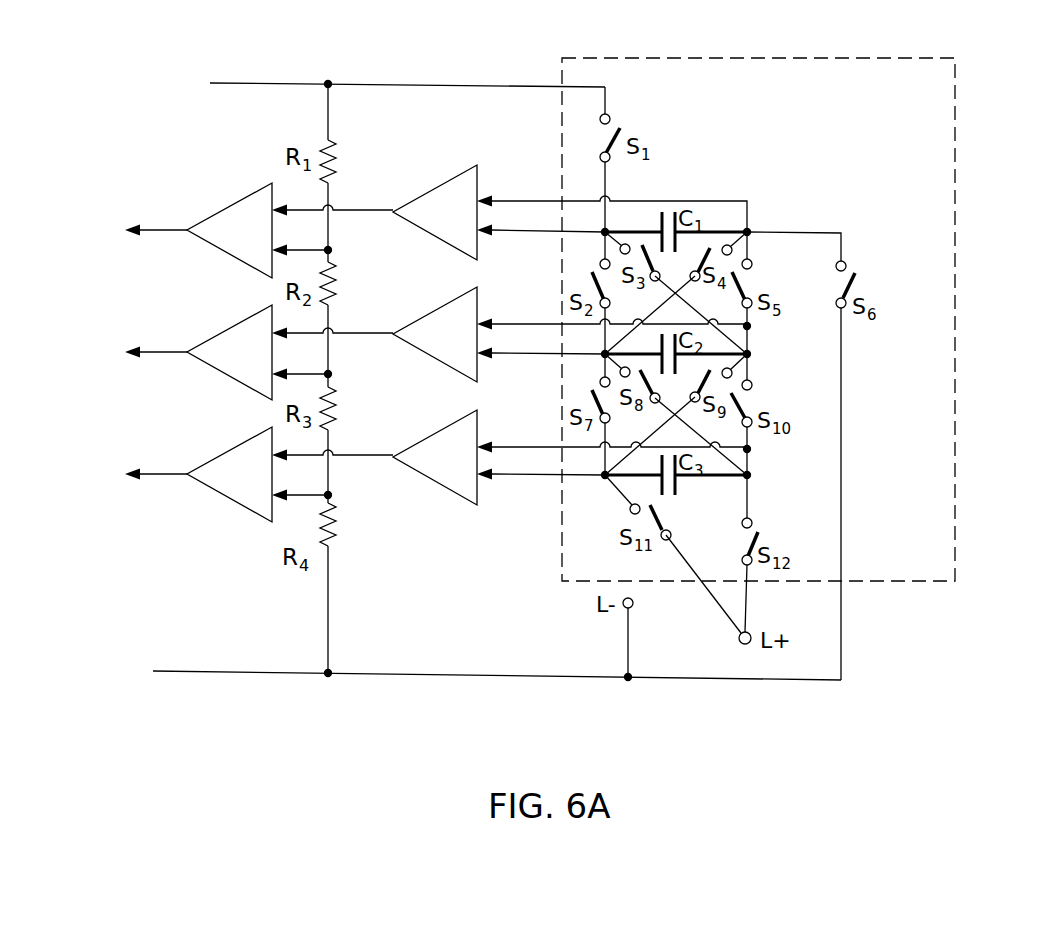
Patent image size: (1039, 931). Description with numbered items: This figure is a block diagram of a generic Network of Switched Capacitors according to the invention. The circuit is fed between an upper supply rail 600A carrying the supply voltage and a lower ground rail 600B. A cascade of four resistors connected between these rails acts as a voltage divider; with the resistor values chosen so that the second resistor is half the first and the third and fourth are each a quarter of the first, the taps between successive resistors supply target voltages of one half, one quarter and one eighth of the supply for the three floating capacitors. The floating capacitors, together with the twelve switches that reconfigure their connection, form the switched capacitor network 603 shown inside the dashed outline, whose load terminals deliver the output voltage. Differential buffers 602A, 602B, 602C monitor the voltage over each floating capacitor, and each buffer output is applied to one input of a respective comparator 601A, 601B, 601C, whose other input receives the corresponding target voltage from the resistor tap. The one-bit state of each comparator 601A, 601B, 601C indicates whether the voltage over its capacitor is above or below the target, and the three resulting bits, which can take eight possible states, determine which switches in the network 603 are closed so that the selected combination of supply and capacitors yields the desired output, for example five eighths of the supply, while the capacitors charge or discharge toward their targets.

The positive supply rail (Vdd) 600A is at (224, 83).
The ground rail (GND) 600B is at (200, 670).
The comparator 601A is at (232, 205).
The comparator 601B is at (232, 327).
The comparator 601C is at (232, 449).
The differential buffer 602A is at (437, 187).
The differential buffer 602B is at (437, 309).
The differential buffer 602C is at (437, 432).
The switched capacitor network 603 is at (955, 340).